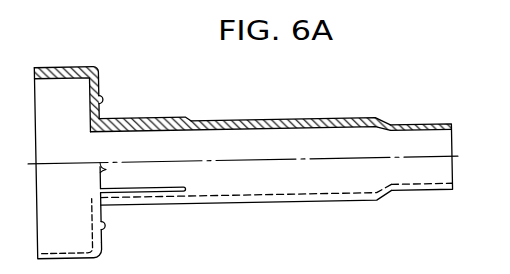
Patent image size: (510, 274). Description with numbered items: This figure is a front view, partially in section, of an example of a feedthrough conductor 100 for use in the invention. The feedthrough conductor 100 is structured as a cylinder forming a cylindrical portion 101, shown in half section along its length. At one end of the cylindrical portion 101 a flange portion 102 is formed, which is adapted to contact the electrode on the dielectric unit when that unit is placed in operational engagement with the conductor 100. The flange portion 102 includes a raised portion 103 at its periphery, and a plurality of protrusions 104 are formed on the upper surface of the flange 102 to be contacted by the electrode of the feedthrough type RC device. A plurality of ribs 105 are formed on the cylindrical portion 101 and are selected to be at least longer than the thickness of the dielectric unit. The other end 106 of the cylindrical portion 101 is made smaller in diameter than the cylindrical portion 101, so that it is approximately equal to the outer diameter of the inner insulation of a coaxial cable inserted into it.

The feedthrough conductor 100 is at (380, 68).
The cylindrical portion 101 is at (318, 120).
The flange portion 102 is at (100, 79).
The raised portion 103 is at (59, 63).
The protrusions 104 is at (106, 98).
The ribs 105 is at (168, 117).
The other end 106 is at (420, 128).